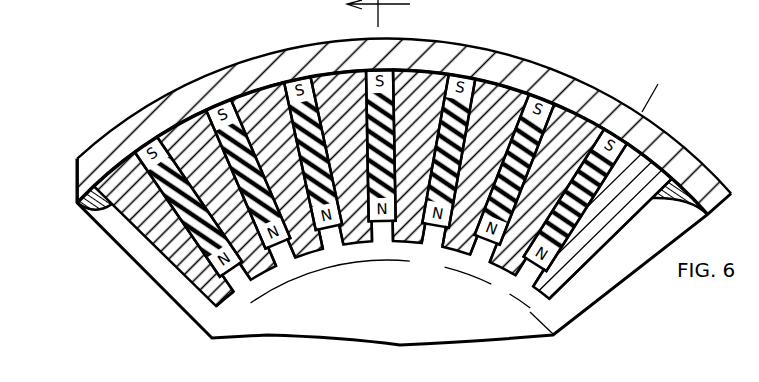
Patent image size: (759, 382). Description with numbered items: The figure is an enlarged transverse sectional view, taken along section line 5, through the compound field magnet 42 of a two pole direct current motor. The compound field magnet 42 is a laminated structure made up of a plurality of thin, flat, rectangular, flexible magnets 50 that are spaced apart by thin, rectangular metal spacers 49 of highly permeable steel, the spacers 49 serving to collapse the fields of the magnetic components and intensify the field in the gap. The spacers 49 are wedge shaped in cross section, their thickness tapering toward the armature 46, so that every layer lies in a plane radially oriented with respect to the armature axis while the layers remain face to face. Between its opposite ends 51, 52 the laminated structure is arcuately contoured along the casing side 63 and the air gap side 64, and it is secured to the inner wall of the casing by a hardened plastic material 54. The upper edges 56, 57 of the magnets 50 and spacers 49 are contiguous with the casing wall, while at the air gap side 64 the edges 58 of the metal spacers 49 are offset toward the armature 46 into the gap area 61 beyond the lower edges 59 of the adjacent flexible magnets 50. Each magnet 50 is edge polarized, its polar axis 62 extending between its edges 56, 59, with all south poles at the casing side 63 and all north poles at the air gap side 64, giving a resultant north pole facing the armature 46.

The section line 5 is at (376, 35).
The compound field magnet 42 is at (592, 221).
The armature 46 is at (528, 307).
The metal spacers 49 is at (174, 110).
The flexible magnets 50 is at (287, 68).
The end of the compound field magnet 51 is at (164, 240).
The end of the compound field magnet 52 is at (586, 265).
The hardened plastic material 54 is at (108, 207).
The upper edges of the flexible magnets 56 is at (556, 70).
The upper edges of the spacers 57 is at (443, 48).
The edges of the metal spacers 58 is at (231, 300).
The lower edges of the flexible magnets 59 is at (346, 236).
The gap area 61 is at (225, 314).
The polar axis 62 is at (645, 111).
The casing side 63 is at (562, 108).
The air gap side 64 is at (402, 240).